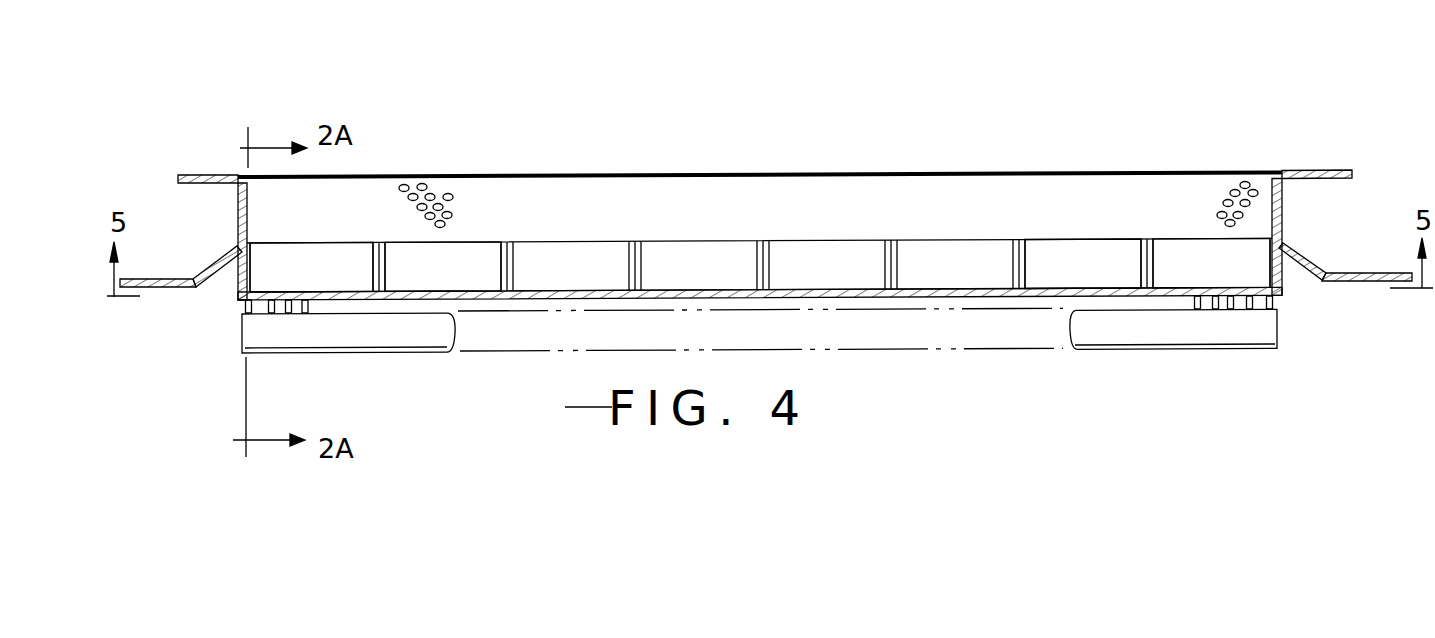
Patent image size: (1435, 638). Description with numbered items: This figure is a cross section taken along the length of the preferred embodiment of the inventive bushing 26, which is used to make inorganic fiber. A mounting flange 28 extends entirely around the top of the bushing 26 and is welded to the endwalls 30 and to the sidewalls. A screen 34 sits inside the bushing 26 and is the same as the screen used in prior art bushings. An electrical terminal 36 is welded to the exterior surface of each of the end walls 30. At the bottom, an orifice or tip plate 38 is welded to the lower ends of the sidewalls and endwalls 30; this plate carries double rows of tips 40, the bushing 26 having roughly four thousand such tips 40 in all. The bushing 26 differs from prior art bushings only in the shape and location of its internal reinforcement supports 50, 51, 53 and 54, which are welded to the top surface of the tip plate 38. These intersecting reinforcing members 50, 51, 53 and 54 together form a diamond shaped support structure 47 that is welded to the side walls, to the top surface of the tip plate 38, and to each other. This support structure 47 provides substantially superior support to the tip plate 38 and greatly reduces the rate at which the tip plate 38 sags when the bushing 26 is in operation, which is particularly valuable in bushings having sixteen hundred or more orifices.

The bushing 26 is at (872, 168).
The mounting flange 28 is at (202, 175).
The endwalls 30 is at (238, 217).
The screen 34 is at (442, 195).
The electrical terminal 36 is at (183, 287).
The orifice or tip plate 38 is at (568, 287).
The tips 40 is at (252, 313).
The diamond shaped support structure 47 is at (897, 268).
The reinforcing member 50 is at (1142, 262).
The reinforcing member 51 is at (372, 269).
The reinforcing member 53 is at (1158, 265).
The reinforcing member 54 is at (387, 269).